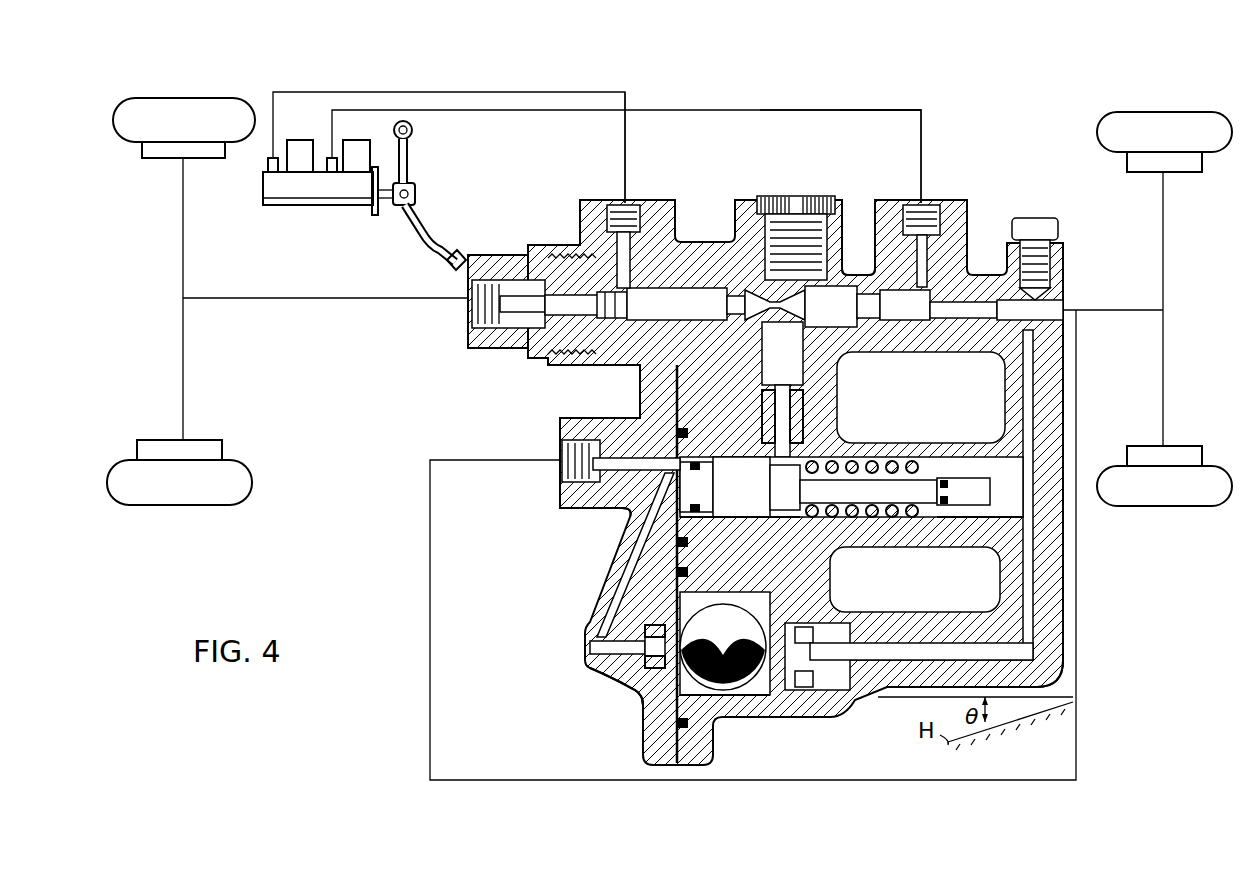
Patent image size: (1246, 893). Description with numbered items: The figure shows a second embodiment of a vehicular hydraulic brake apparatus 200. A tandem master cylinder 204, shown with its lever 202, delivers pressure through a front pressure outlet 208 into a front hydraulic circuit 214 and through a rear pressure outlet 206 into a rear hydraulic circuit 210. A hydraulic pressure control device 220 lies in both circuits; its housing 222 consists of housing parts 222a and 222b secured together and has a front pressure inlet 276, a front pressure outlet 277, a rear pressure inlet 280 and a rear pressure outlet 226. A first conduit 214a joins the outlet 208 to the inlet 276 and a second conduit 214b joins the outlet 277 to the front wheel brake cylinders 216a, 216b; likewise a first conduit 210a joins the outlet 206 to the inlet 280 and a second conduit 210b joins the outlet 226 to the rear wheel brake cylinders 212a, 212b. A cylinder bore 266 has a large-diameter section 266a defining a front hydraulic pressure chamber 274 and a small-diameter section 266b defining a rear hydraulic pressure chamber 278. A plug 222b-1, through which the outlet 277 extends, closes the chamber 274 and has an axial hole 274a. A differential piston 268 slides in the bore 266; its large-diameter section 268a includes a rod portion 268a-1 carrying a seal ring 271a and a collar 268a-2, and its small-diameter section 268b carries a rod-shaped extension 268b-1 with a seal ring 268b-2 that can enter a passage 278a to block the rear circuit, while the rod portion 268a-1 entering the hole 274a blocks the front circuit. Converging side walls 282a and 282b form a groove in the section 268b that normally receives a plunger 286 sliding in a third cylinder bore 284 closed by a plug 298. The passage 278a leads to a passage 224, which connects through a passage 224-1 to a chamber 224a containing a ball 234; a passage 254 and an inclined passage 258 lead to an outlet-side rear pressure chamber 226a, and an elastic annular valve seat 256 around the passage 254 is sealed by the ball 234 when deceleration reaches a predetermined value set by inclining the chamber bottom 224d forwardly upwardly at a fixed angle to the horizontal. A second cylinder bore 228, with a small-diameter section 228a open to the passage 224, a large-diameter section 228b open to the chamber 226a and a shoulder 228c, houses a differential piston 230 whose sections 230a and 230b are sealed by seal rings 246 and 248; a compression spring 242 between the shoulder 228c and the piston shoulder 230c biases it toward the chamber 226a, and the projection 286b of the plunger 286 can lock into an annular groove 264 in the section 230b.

The vehicular hydraulic brake apparatus 200 is at (895, 101).
The brake pedal lever 202 is at (455, 252).
The tandem master cylinder 204 is at (343, 208).
The rear pressure outlet 206 is at (345, 175).
The front pressure outlet 208 is at (268, 166).
The rear hydraulic circuit 210 is at (522, 144).
The first conduit 210a is at (765, 112).
The second conduit 210b is at (1135, 309).
The rear wheel brake cylinder 212a is at (1160, 165).
The rear wheel brake cylinder 212b is at (1163, 450).
The front hydraulic circuit 214 is at (420, 92).
The first conduit 214a is at (622, 128).
The second conduit 214b is at (300, 298).
The front wheel brake cylinder 216a is at (190, 160).
The front wheel brake cylinder 216b is at (183, 432).
The hydraulic pressure control device 220 is at (500, 432).
The housing 222 is at (1140, 557).
The housing part 222a is at (1050, 618).
The housing part 222b is at (622, 688).
The plug 222b-1 is at (468, 340).
The passage 224 is at (1035, 420).
The passage 224-1 is at (950, 645).
The chamber 224a is at (768, 697).
The chamber bottom 224d is at (700, 697).
The rear pressure outlet 226 is at (621, 472).
The outlet-side rear pressure chamber 226a is at (632, 518).
The second cylinder bore 228 is at (800, 582).
The small-diameter section 228a is at (1012, 505).
The large-diameter section 228b is at (752, 520).
The shoulder 228c is at (918, 462).
The differential piston 230 is at (748, 457).
The small-diameter section 230a is at (895, 478).
The large-diameter section 230b is at (708, 522).
The shoulder 230c is at (888, 470).
The ball 234 is at (723, 598).
The compression spring 242 is at (880, 520).
The elastic seal ring 246 is at (950, 490).
The elastic seal ring 248 is at (680, 432).
The passage 254 is at (590, 647).
The annular valve seat 256 is at (628, 695).
The inclined passage 258 is at (636, 580).
The annular groove 264 is at (805, 440).
The cylinder bore 266 is at (700, 285).
The large-diameter section 266a is at (658, 296).
The small-diameter section 266b is at (860, 268).
The differential piston 268 is at (900, 382).
The large-diameter section 268a is at (718, 255).
The rod portion 268a-1 is at (595, 391).
The collar 268a-2 is at (740, 320).
The small-diameter section 268b is at (905, 340).
The rod-shaped extension 268b-1 is at (975, 262).
The seal ring 268b-2 is at (900, 322).
The seal ring 271a is at (585, 300).
The front hydraulic pressure chamber 274 is at (575, 250).
The axial hole 274a is at (548, 262).
The front pressure inlet 276 is at (607, 212).
The front pressure outlet 277 is at (508, 311).
The rear hydraulic pressure chamber 278 is at (908, 318).
The passage 278a is at (1030, 318).
The rear pressure inlet 280 is at (922, 255).
The side wall 282a is at (735, 310).
The side wall 282b is at (800, 300).
The third cylinder bore 284 is at (765, 355).
The plunger 286 is at (778, 430).
The rod-shaped projection 286b is at (743, 487).
The plug 298 is at (790, 206).